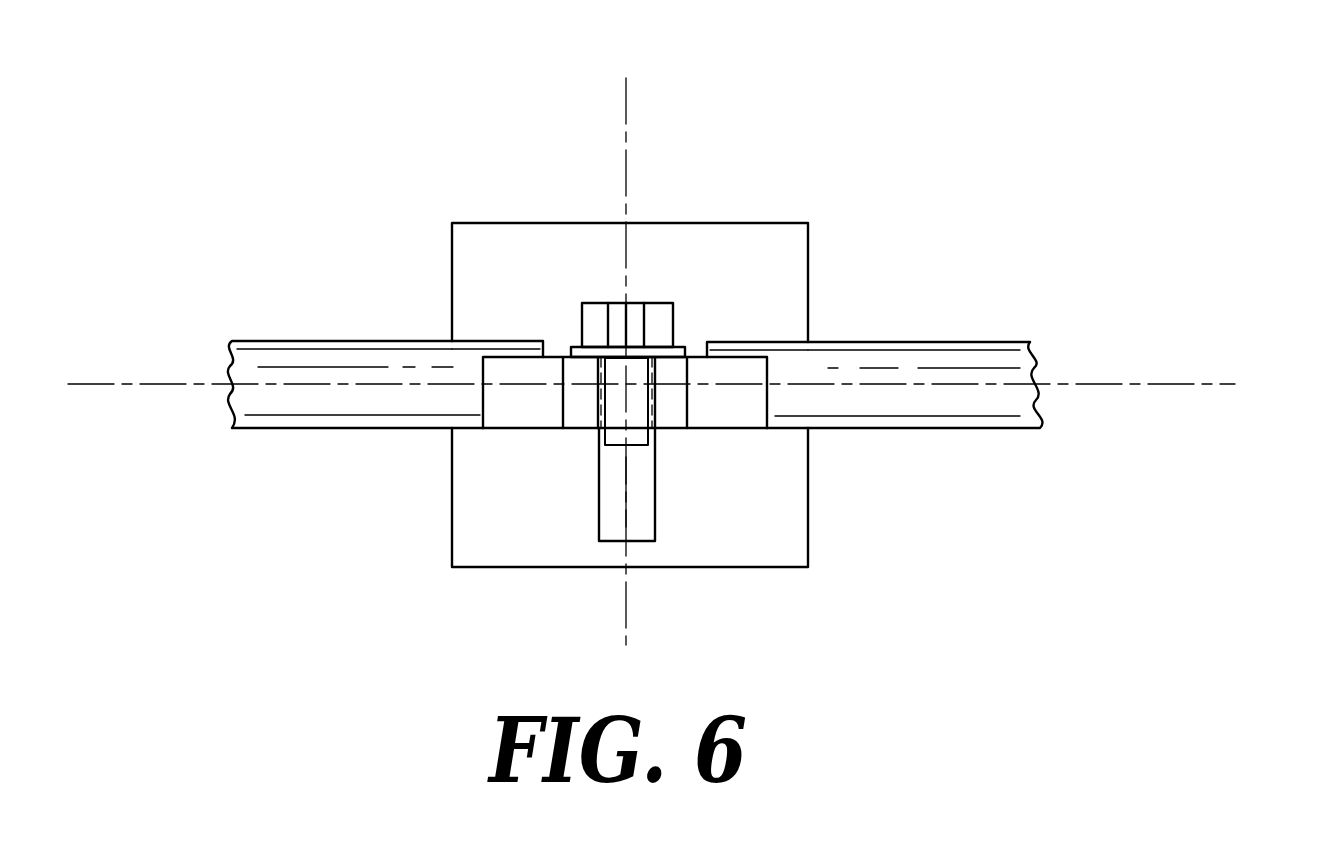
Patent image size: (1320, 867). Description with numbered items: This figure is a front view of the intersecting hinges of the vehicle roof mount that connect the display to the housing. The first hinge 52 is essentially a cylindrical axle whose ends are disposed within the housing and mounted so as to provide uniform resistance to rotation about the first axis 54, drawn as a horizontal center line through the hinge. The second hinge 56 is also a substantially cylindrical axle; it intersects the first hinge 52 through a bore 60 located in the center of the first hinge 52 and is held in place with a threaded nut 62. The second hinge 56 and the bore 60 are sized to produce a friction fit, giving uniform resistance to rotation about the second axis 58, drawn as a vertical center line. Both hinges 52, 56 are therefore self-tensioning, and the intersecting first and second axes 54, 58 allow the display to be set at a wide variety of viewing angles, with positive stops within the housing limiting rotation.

The first hinge 52 is at (943, 355).
The first axis 54 is at (1163, 385).
The second hinge 56 is at (599, 503).
The second axis 58 is at (626, 203).
The bore 60 is at (600, 399).
The threaded nut 62 is at (660, 325).